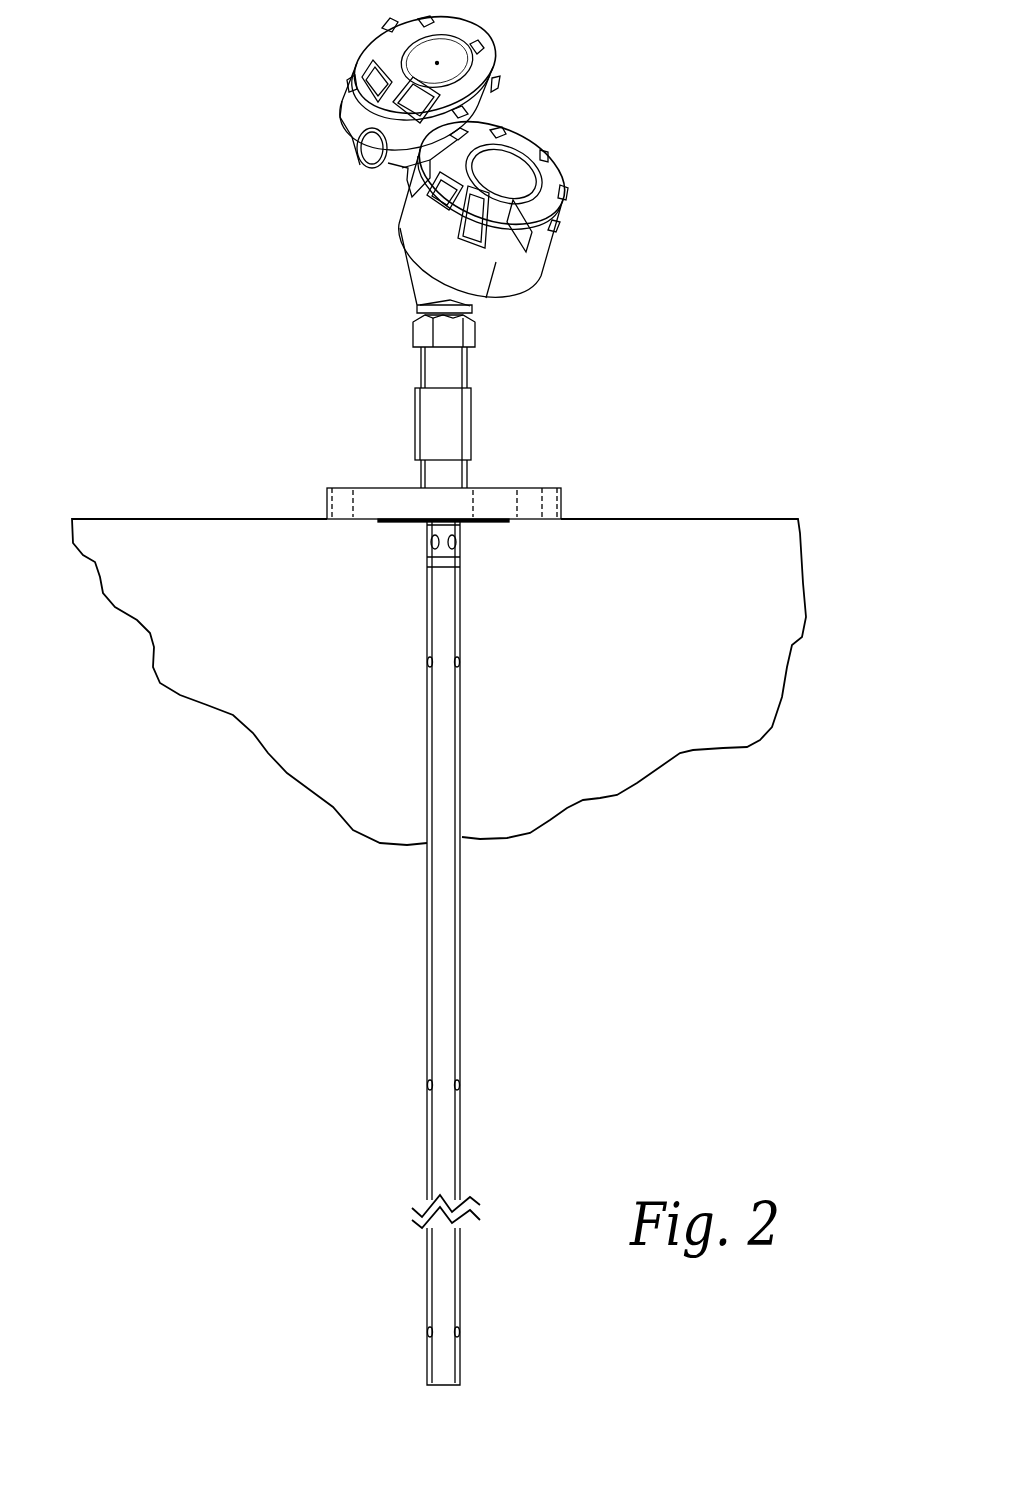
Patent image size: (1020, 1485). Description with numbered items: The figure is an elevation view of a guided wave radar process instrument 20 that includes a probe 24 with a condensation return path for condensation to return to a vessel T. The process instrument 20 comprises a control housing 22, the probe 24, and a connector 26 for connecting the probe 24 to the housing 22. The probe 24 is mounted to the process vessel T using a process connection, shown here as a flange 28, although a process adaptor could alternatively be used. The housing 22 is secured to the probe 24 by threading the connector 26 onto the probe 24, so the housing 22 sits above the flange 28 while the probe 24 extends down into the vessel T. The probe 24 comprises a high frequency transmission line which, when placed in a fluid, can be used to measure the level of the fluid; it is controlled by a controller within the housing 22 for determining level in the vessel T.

The process instrument 20 is at (508, 693).
The control housing 22 is at (563, 139).
The probe 24 is at (492, 1029).
The connector 26 is at (492, 330).
The flange 28 is at (535, 487).
The vessel T is at (725, 518).